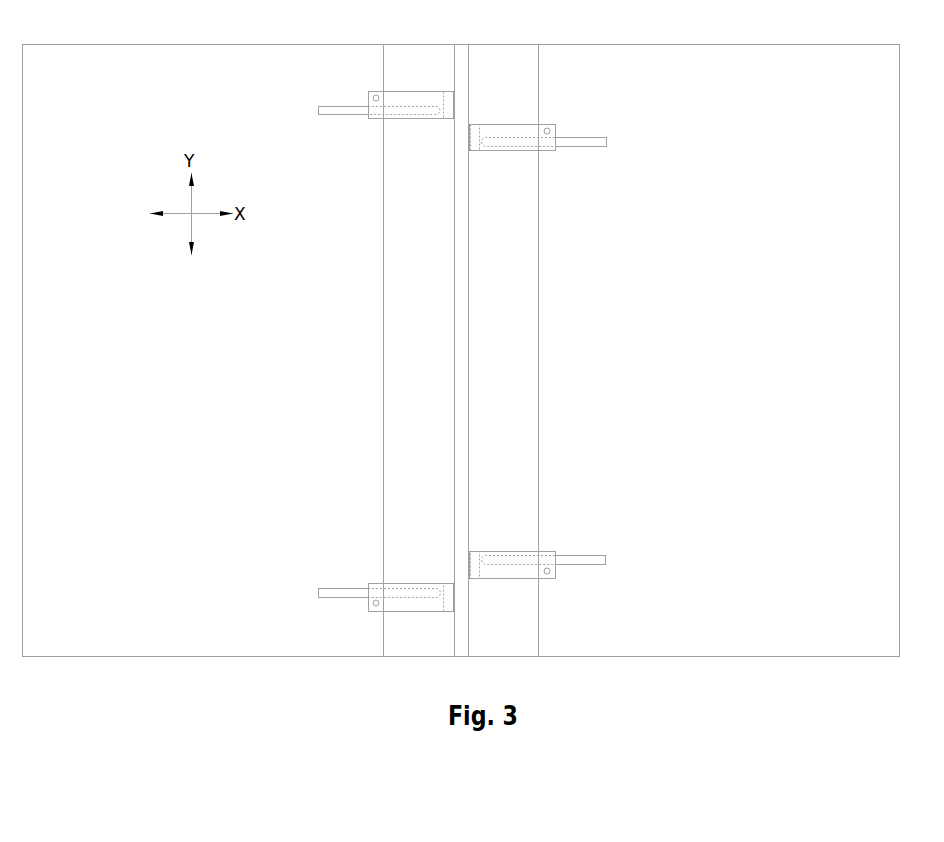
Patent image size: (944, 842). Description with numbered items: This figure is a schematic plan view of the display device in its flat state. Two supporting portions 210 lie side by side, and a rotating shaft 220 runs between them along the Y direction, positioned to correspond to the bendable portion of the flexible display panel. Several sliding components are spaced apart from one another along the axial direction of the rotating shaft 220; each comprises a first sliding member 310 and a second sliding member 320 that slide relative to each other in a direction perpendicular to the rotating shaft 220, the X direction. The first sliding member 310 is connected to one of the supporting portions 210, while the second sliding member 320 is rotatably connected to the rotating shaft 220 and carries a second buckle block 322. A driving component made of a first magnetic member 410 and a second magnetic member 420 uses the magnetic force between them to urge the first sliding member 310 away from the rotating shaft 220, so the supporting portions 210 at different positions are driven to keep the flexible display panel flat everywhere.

The supporting portion 210 is at (553, 305).
The rotating shaft 220 is at (462, 352).
The first sliding member 310 is at (583, 142).
The second sliding member 320 is at (522, 129).
The second buckle block 322 is at (550, 129).
The first magnetic member 410 is at (483, 140).
The second magnetic member 420 is at (470, 150).